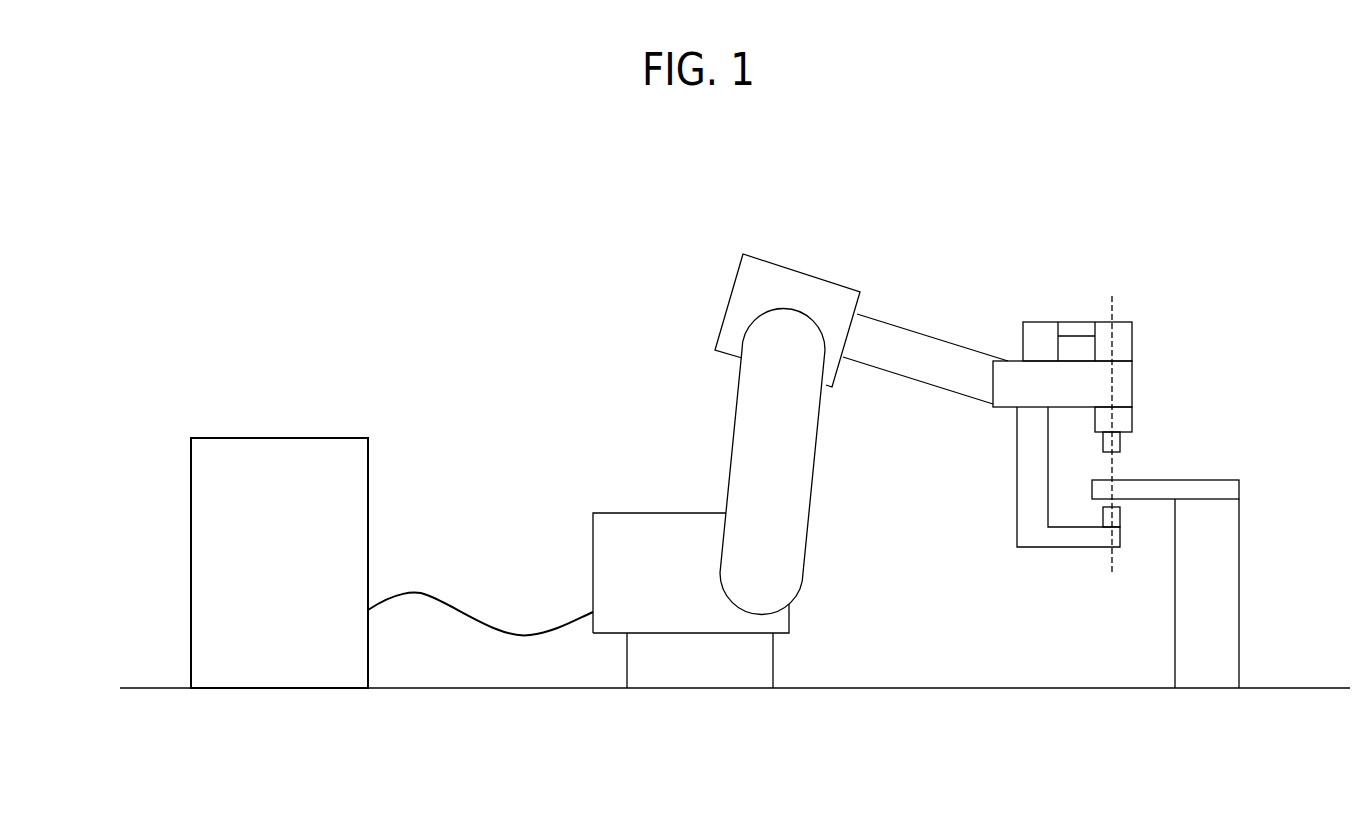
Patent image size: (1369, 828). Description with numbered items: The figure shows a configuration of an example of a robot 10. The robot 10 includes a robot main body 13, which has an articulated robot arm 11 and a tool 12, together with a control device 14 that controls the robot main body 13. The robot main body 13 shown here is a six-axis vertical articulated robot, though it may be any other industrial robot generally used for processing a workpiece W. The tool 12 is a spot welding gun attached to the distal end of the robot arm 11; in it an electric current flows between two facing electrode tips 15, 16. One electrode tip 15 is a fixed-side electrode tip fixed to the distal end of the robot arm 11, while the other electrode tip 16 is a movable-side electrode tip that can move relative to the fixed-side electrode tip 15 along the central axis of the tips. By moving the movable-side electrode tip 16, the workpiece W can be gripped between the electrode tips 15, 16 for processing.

The robot 10 is at (427, 253).
The robot arm 11 is at (918, 330).
The tool 12 is at (1143, 338).
The robot main body 13 is at (1090, 253).
The control device 14 is at (278, 437).
The fixed-side electrode tip 15 is at (1120, 518).
The movable-side electrode tip 16 is at (1102, 440).
The workpiece W is at (1158, 480).